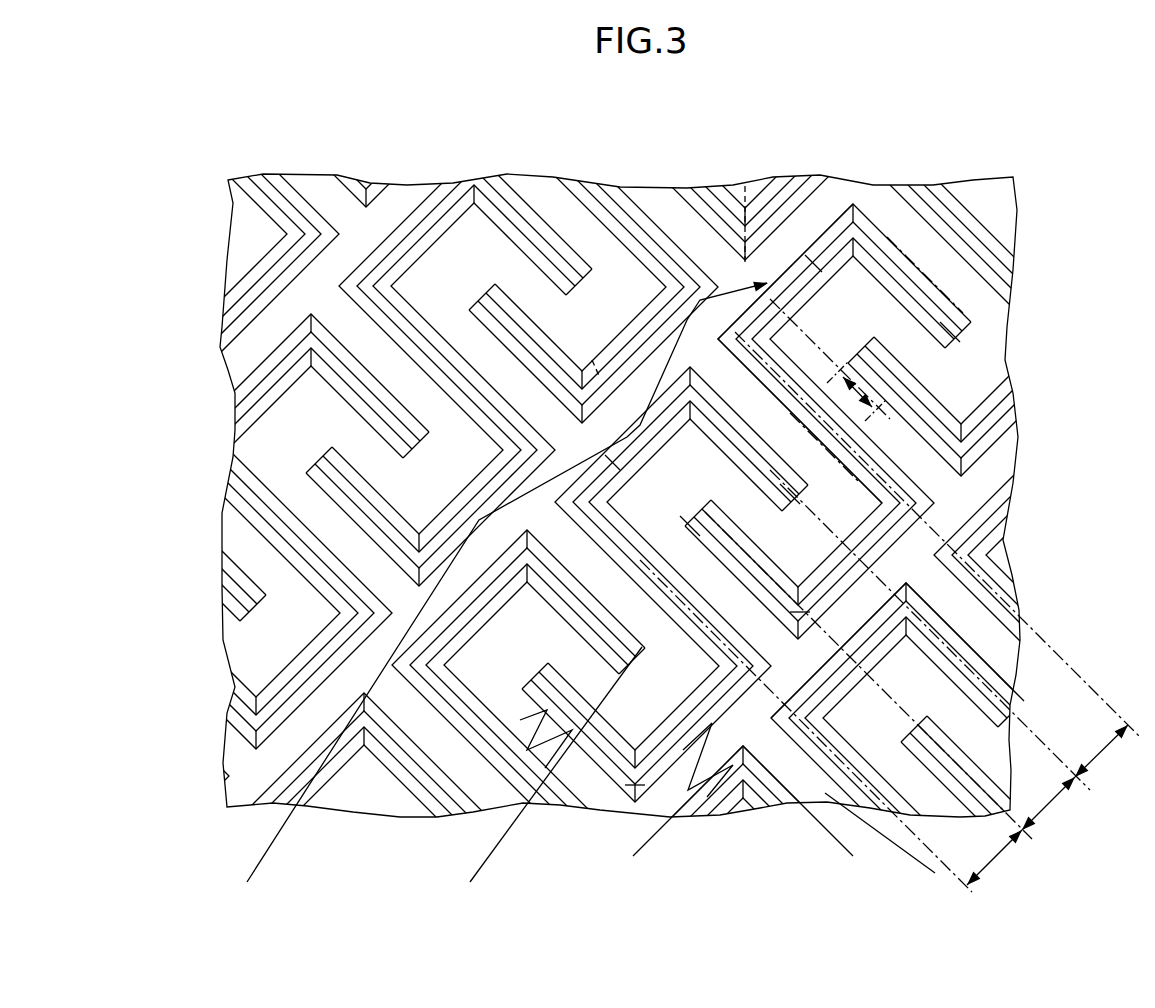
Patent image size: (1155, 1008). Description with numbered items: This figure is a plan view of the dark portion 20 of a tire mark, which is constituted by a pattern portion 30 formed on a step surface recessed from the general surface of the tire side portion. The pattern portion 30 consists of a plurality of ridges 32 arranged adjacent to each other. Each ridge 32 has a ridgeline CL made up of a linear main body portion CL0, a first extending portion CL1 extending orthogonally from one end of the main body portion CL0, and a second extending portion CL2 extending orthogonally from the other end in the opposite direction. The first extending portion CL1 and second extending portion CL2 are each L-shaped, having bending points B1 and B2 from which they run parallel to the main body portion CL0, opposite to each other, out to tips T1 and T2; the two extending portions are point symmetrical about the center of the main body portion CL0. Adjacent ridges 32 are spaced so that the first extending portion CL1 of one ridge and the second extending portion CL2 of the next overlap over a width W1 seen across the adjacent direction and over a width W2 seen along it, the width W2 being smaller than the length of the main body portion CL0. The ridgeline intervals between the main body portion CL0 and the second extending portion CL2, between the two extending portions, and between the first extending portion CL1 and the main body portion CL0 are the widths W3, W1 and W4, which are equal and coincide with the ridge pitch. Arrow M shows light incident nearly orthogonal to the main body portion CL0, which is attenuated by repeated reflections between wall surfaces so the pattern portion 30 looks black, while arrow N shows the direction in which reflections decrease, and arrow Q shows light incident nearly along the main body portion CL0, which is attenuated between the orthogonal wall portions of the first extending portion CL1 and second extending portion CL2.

The dark portion 20 is at (1023, 138).
The pattern portion 30 is at (887, 226).
The ridge 32 is at (835, 597).
The bending point B1 is at (815, 262).
The bending point B2 is at (800, 620).
The ridgeline CL is at (784, 304).
The main body portion CL0 is at (790, 383).
The first extending portion CL1 is at (745, 186).
The second extending portion CL2 is at (820, 561).
The tip T1 is at (950, 330).
The tip T2 is at (687, 523).
The width W1 is at (1050, 803).
The width W2 is at (866, 375).
The width W3 is at (995, 857).
The width W4 is at (1103, 750).
The arrow N is at (272, 845).
The arrow M is at (493, 845).
The arrow Q is at (875, 833).